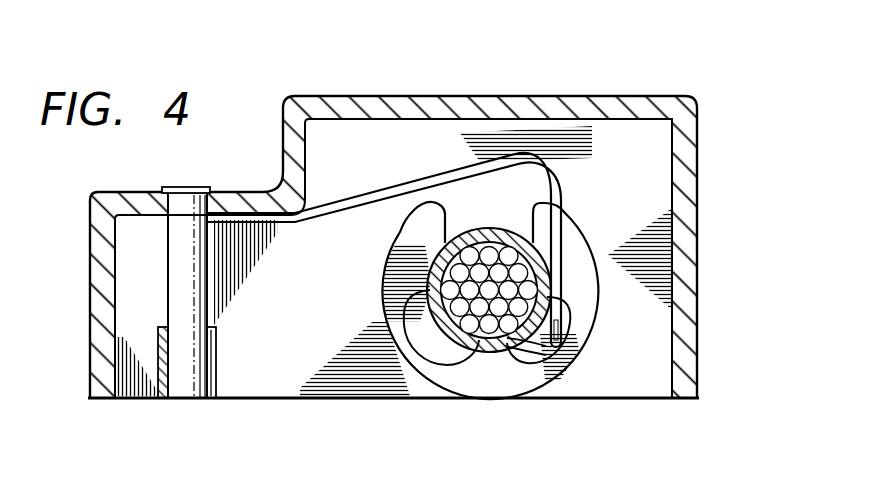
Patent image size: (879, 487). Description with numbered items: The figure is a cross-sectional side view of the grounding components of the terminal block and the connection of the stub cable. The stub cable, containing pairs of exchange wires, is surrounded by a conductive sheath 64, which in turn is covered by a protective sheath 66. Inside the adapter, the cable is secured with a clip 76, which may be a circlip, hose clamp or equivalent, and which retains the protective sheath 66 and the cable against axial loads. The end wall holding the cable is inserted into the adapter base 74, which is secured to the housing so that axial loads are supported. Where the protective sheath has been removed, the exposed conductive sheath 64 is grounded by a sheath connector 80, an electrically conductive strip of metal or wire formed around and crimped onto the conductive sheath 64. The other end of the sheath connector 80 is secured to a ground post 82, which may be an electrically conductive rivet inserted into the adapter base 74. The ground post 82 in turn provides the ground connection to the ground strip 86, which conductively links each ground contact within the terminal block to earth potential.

The conductive sheath 64 is at (440, 331).
The protective sheath 66 is at (482, 354).
The adapter base 74 is at (562, 97).
The clip 76 is at (510, 385).
The sheath connector 80 is at (343, 208).
The ground post 82 is at (178, 300).
The ground strip 86 is at (210, 368).